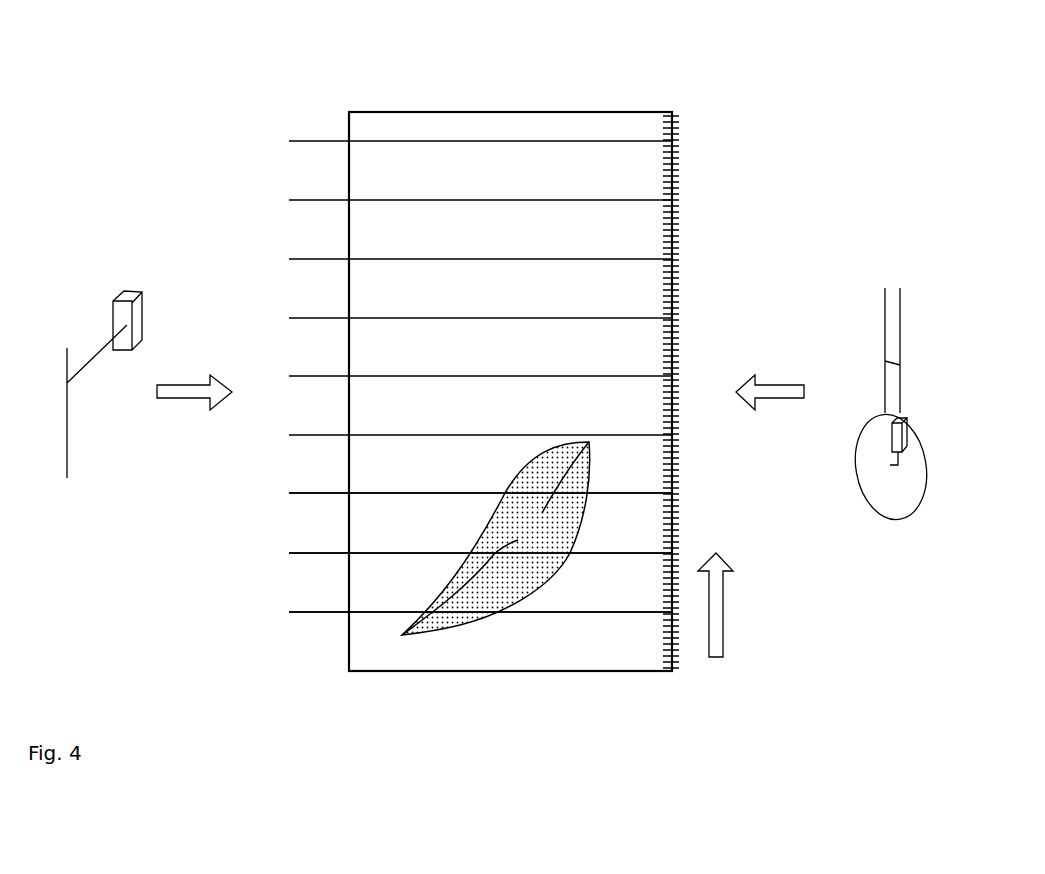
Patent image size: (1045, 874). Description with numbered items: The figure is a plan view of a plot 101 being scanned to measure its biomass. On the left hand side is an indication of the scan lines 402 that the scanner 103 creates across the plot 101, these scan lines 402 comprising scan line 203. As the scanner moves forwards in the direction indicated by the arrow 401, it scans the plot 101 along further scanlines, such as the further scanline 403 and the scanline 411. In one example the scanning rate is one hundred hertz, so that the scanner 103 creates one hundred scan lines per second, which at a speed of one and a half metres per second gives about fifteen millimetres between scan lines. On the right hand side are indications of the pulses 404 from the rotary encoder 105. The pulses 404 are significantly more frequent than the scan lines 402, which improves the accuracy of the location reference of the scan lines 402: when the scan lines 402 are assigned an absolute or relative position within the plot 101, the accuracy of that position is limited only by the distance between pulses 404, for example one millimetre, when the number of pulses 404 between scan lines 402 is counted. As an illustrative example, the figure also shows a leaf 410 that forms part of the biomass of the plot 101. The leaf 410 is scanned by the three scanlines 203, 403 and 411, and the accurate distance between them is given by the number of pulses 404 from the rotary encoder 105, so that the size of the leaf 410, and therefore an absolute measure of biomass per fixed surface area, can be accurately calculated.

The plot 101 is at (490, 110).
The scan lines 402 is at (312, 112).
The pulses 404 is at (681, 100).
The scanline 411 is at (297, 493).
The further scanline 403 is at (297, 553).
The scan line 203 is at (297, 612).
The leaf 410 is at (552, 538).
The scanner 103 is at (127, 293).
The rotary encoder 105 is at (932, 400).
The arrow 401 is at (718, 600).